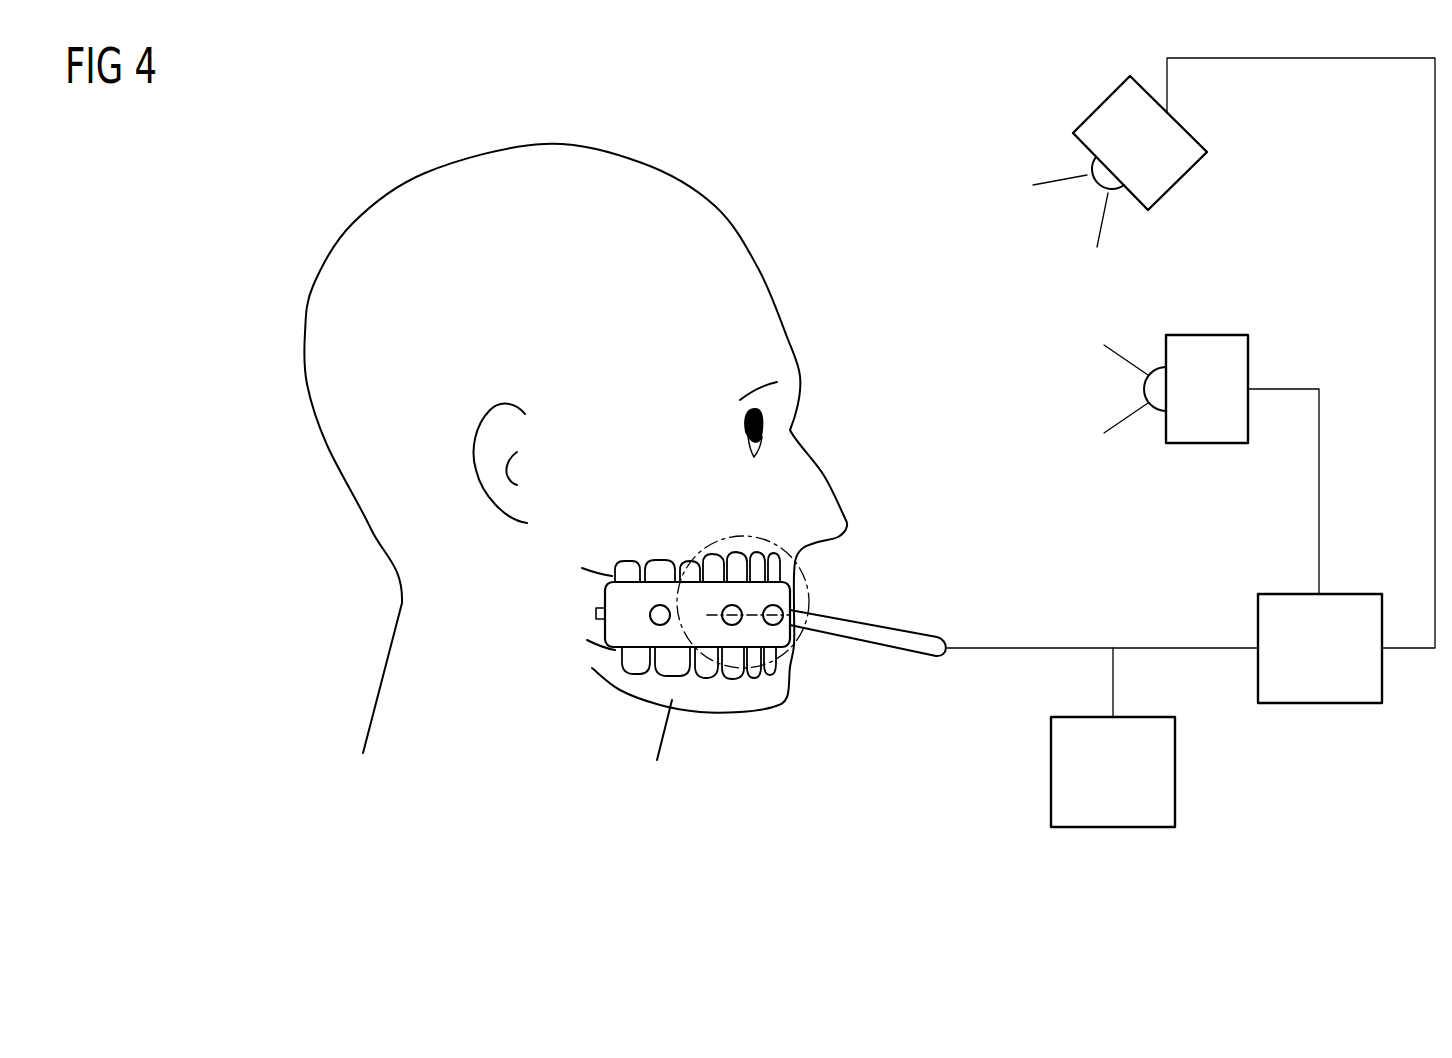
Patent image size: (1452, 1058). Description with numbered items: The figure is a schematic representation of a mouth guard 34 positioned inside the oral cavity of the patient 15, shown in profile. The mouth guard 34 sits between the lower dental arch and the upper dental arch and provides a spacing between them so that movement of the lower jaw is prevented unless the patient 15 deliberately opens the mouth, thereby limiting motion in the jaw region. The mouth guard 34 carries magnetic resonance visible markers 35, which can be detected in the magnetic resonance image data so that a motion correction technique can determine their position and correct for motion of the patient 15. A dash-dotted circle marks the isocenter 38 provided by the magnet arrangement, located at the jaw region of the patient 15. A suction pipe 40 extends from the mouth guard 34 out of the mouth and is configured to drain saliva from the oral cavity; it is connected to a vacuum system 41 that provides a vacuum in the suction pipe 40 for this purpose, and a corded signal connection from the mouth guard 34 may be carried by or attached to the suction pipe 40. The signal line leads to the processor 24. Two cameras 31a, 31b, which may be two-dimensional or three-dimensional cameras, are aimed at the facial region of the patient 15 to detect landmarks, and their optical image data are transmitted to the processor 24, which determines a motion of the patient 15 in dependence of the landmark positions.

The patient 15 is at (307, 320).
The processor 24 is at (1320, 704).
The camera 31a is at (1090, 98).
The camera 31b is at (1208, 333).
The mouth guard 34 is at (791, 601).
The magnetic resonance visible markers 35 is at (732, 625).
The isocenter 38 is at (735, 530).
The suction pipe 40 is at (880, 650).
The vacuum system 41 is at (1116, 829).